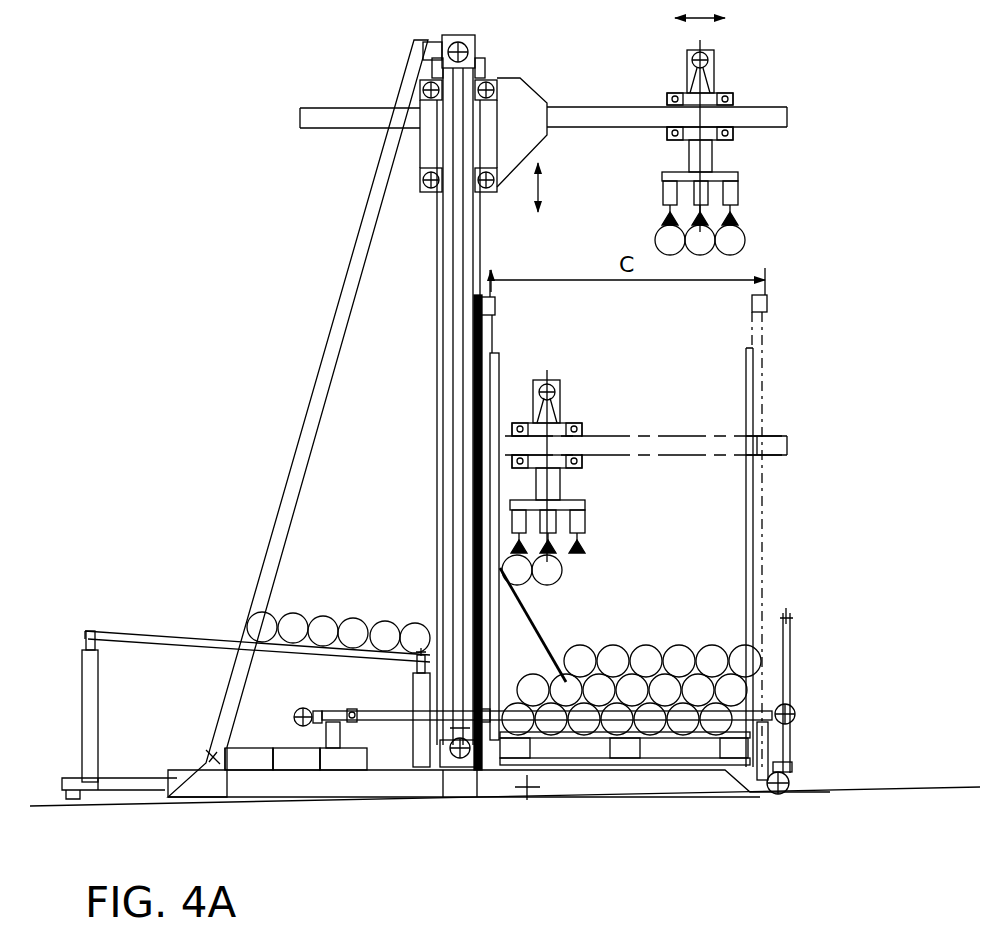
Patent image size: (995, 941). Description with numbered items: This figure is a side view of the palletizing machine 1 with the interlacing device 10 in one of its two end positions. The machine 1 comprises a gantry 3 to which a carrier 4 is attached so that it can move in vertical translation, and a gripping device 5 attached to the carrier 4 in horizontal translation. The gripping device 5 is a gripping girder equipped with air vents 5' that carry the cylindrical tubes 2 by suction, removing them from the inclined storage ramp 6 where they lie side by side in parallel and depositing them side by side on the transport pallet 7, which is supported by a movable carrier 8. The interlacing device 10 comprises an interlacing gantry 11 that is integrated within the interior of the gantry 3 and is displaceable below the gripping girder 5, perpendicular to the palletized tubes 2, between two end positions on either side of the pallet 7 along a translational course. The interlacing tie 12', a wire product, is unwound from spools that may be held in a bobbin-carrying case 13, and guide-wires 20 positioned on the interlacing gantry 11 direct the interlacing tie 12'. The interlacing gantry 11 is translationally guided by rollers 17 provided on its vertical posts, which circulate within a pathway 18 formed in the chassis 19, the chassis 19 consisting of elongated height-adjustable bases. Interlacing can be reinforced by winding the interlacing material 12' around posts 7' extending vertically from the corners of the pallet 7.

The palletizing machine 1 is at (318, 255).
The cylindrical tubes 2 is at (740, 246).
The gantry 3 is at (443, 293).
The carrier 4 is at (520, 78).
The gripping device 5 is at (646, 282).
The air vents 5' is at (684, 340).
The inclined storage ramp 6 is at (197, 637).
The transport pallet 7 is at (625, 802).
The posts 7' is at (801, 473).
The movable carrier 8 is at (795, 640).
The interlacing device 10 is at (778, 352).
The interlacing gantry 11 is at (760, 412).
The interlacing tie 12' is at (564, 505).
The bobbin-carrying case 13 is at (355, 778).
The rollers 17 is at (349, 708).
The pathway 18 is at (321, 708).
The chassis 19 is at (370, 740).
The guide-wires 20 is at (768, 304).